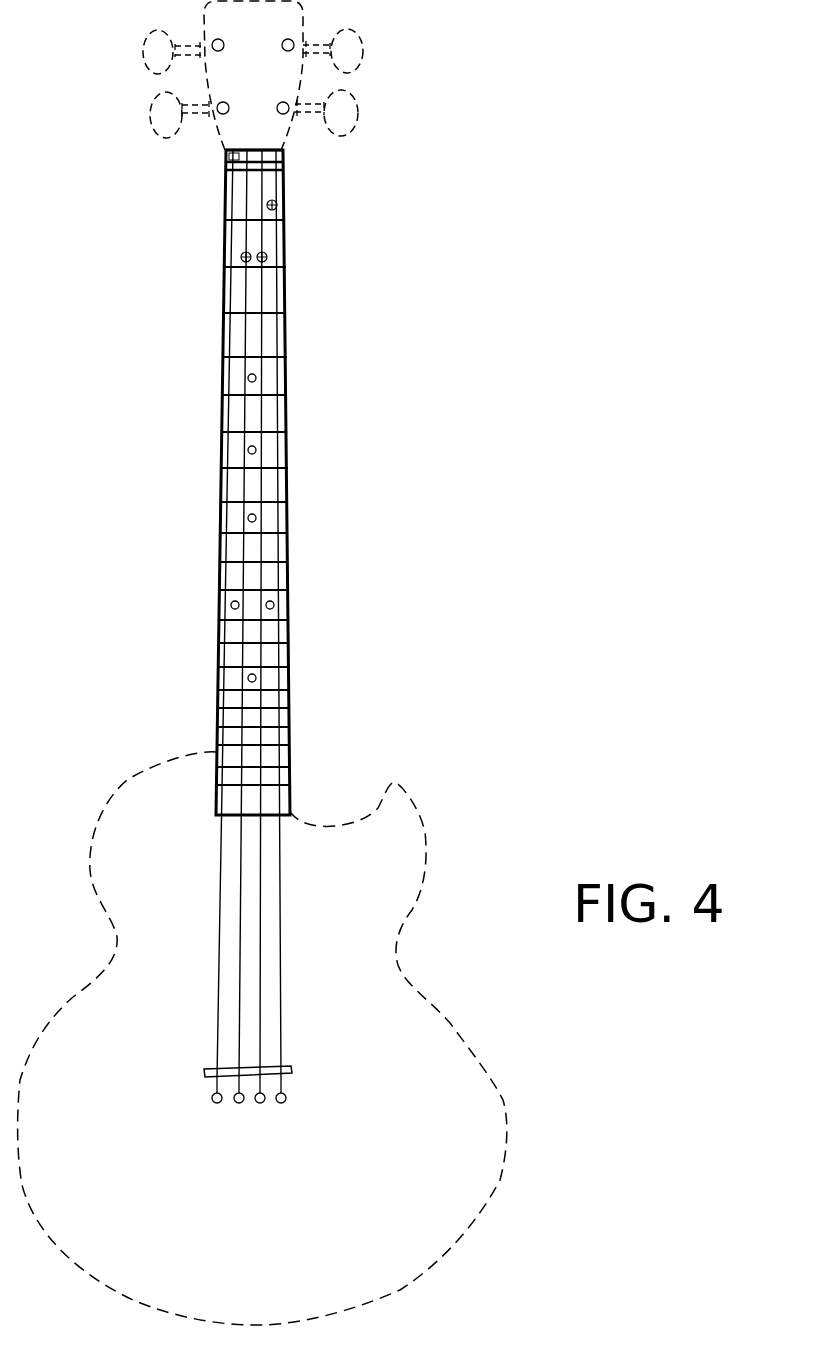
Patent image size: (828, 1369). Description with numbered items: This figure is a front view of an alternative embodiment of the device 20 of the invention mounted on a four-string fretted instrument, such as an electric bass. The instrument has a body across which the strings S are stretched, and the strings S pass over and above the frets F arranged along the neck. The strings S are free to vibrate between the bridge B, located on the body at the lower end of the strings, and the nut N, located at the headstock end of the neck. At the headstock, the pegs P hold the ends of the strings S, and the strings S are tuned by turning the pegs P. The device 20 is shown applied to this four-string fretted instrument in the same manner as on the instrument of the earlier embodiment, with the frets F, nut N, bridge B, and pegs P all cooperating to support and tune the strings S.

The pegs P is at (350, 48).
The nut N is at (281, 166).
The frets F is at (285, 356).
The device 20 is at (284, 552).
The strings S is at (284, 678).
The bridge B is at (293, 1071).